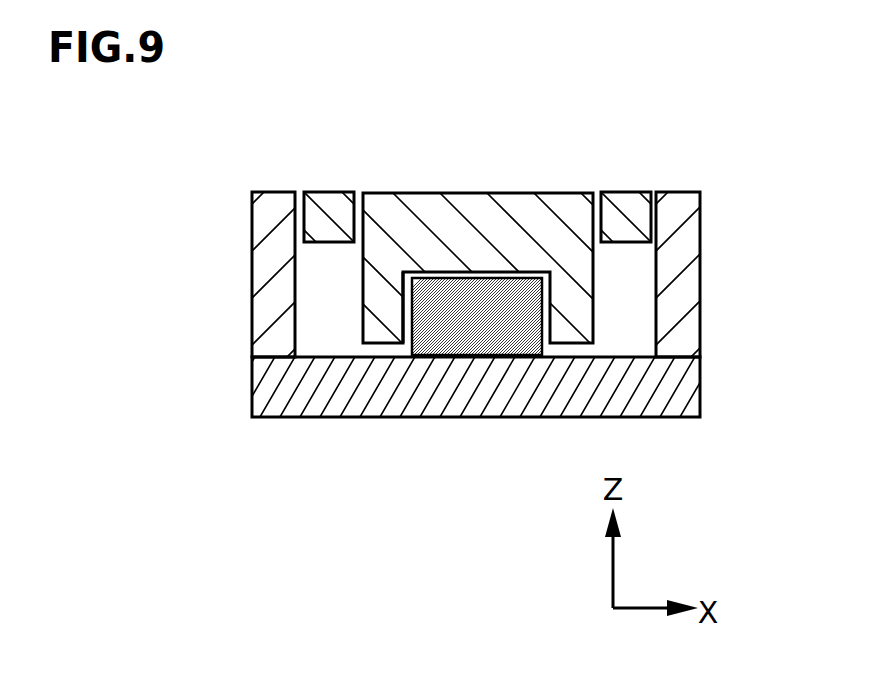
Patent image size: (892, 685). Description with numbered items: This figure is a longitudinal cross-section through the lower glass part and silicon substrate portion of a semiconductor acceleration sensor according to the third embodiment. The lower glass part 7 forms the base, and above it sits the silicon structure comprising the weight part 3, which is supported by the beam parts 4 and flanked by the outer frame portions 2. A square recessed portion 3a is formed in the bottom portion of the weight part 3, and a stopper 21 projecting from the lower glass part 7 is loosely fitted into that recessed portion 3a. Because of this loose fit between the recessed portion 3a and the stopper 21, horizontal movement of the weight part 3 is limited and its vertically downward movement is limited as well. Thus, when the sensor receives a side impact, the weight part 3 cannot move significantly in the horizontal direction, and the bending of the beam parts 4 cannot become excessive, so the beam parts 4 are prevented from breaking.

The side wall / bank 2 is at (270, 191).
The weight part 3 is at (477, 191).
The recessed portion 3a is at (411, 302).
The beam parts 4 is at (325, 191).
The lower glass part 7 is at (313, 418).
The stopper 21 is at (483, 349).